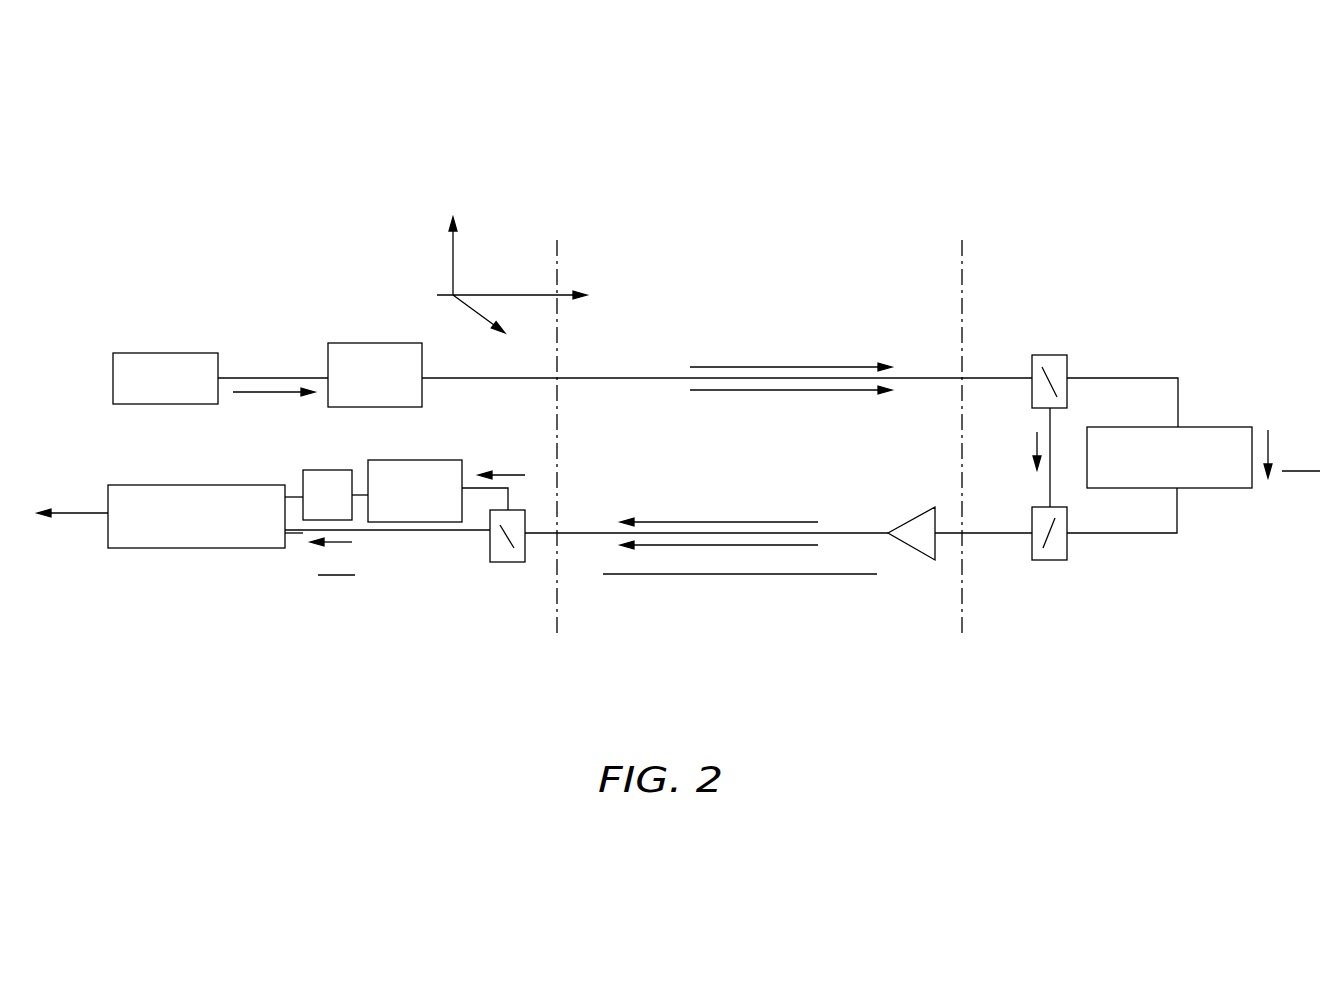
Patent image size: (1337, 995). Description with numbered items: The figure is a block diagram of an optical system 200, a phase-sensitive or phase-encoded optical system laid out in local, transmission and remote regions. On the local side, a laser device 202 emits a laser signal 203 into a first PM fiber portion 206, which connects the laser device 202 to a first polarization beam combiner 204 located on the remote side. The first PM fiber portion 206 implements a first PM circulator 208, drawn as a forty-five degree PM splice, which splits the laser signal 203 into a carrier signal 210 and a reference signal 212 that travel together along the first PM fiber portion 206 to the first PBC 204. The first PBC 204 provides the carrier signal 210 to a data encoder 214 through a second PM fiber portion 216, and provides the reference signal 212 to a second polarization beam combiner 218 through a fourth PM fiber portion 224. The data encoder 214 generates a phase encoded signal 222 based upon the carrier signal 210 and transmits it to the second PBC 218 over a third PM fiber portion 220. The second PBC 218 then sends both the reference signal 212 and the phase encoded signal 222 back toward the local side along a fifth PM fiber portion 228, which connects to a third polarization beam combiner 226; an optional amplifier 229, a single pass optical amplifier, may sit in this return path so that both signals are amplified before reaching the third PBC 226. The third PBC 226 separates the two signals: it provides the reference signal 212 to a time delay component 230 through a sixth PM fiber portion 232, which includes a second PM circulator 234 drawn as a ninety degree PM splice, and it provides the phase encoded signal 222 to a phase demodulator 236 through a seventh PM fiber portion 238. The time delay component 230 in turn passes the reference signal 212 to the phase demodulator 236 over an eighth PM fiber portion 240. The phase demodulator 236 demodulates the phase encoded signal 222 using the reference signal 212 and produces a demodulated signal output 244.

The optical system 200 is at (350, 168).
The laser device 202 is at (138, 353).
The laser signal 203 is at (273, 405).
The first polarization beam combiner 204 is at (1060, 365).
The first PM fiber portion 206 is at (918, 376).
The first PM circulator 208 is at (340, 343).
The carrier signal 210 is at (791, 341).
The reference signal 212 is at (791, 415).
The data encoder 214 is at (1228, 425).
The second PM fiber portion 216 is at (1170, 378).
The second polarization beam combiner 218 is at (1067, 553).
The third PM fiber portion 220 is at (1160, 535).
The phase encoded signal 222 is at (740, 574).
The fourth PM fiber portion 224 is at (1048, 485).
The third polarization beam combiner 226 is at (490, 555).
The fifth PM fiber portion 228 is at (580, 535).
The amplifier 229 is at (913, 548).
The time delay component 230 is at (305, 520).
The sixth PM fiber portion 232 is at (470, 487).
The second PM circulator 234 is at (433, 460).
The phase demodulator 236 is at (118, 490).
The seventh PM fiber portion 238 is at (387, 536).
The eighth PM fiber portion 240 is at (295, 492).
The demodulated signal output 244 is at (72, 532).